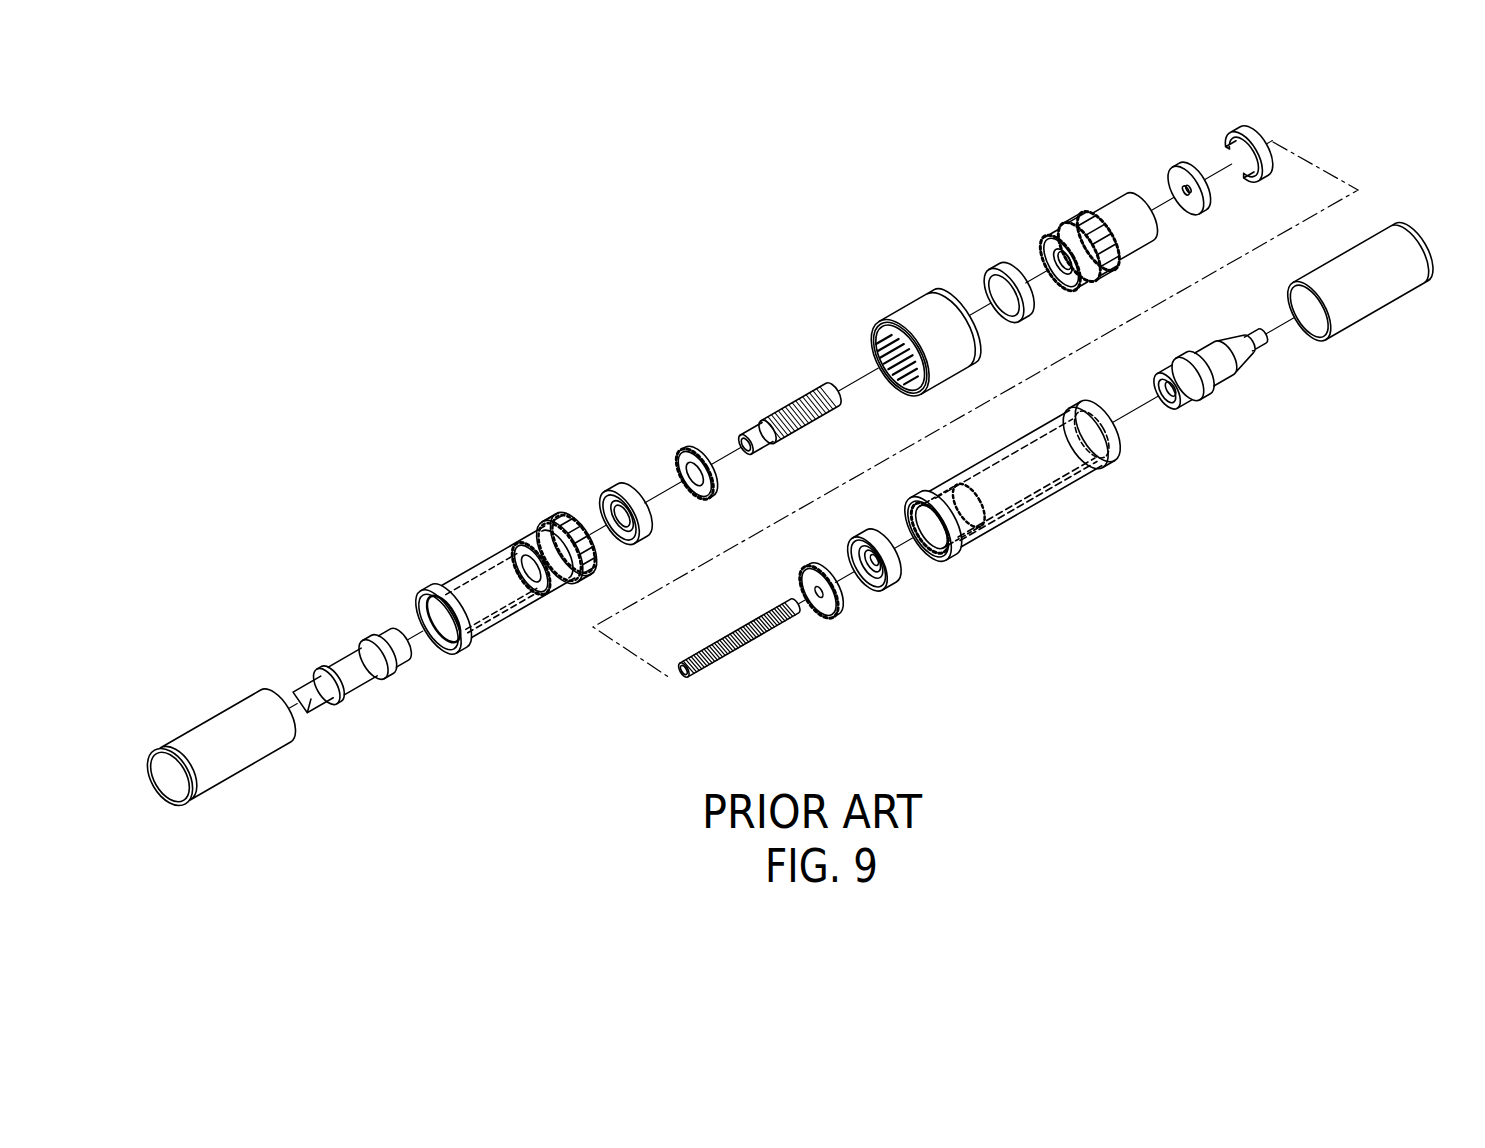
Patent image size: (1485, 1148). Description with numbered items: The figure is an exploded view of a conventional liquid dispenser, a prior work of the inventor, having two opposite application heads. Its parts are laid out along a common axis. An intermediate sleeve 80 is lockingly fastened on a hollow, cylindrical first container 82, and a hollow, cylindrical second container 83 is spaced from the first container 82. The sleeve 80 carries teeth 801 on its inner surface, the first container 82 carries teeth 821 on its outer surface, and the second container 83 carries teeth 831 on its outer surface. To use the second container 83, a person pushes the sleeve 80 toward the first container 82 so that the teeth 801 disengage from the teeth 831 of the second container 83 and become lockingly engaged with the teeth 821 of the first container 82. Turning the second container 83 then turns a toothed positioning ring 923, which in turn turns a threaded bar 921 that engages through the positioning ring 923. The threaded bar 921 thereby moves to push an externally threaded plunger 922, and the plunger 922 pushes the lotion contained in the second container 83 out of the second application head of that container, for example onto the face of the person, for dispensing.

The intermediate sleeve 80 is at (904, 286).
The teeth 801 is at (893, 327).
The first container 82 is at (473, 540).
The teeth 821 is at (587, 580).
The second container 83 is at (1045, 520).
The teeth 831 is at (963, 553).
The threaded bar 921 is at (762, 652).
The externally threaded plunger 922 is at (897, 580).
The toothed positioning ring 923 is at (827, 607).